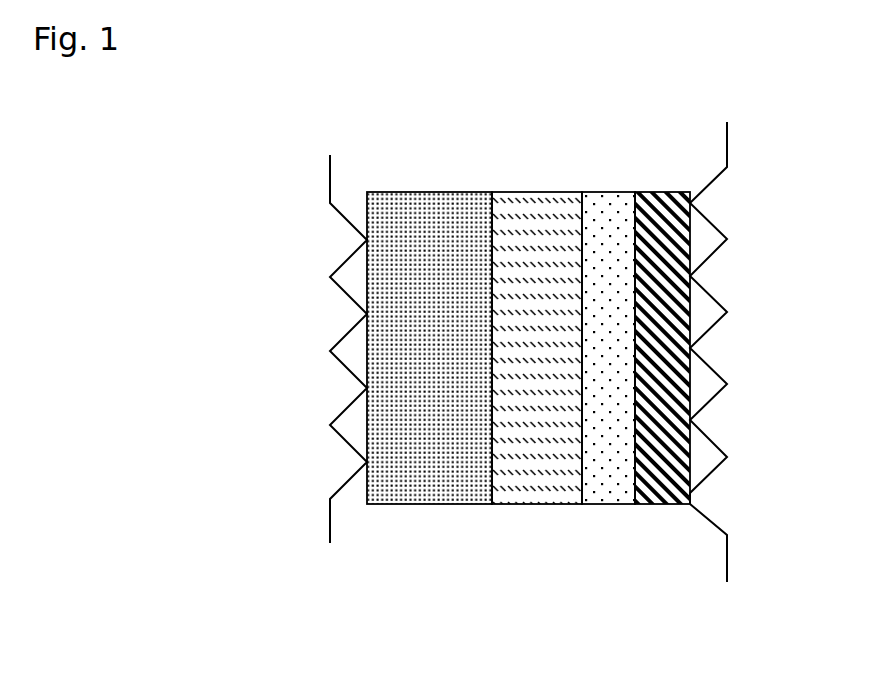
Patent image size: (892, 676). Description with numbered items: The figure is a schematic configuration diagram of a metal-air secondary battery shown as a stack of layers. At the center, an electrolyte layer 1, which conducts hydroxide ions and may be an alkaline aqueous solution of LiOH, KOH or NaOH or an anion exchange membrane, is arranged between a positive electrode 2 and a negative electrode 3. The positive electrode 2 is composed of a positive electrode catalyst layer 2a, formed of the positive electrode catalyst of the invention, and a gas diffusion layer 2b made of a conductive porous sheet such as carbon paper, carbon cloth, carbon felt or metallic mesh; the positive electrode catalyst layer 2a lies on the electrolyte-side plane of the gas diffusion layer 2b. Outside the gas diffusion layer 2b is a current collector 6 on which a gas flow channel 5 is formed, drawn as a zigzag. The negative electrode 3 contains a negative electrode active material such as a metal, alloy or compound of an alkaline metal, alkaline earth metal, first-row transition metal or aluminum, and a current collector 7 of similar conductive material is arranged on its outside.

The electrolyte layer 1 is at (535, 487).
The positive electrode 2 is at (634, 421).
The positive electrode catalyst layer 2a is at (603, 488).
The gas diffusion layer 2b is at (660, 488).
The negative electrode 3 is at (433, 487).
The gas flow channel 5 is at (703, 322).
The current collector 6 is at (727, 143).
The current collector 7 is at (330, 186).